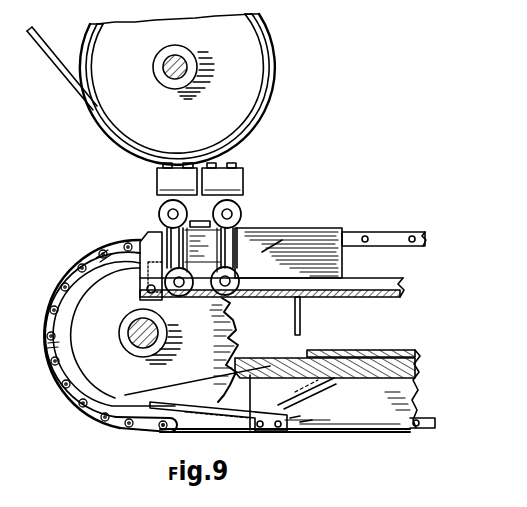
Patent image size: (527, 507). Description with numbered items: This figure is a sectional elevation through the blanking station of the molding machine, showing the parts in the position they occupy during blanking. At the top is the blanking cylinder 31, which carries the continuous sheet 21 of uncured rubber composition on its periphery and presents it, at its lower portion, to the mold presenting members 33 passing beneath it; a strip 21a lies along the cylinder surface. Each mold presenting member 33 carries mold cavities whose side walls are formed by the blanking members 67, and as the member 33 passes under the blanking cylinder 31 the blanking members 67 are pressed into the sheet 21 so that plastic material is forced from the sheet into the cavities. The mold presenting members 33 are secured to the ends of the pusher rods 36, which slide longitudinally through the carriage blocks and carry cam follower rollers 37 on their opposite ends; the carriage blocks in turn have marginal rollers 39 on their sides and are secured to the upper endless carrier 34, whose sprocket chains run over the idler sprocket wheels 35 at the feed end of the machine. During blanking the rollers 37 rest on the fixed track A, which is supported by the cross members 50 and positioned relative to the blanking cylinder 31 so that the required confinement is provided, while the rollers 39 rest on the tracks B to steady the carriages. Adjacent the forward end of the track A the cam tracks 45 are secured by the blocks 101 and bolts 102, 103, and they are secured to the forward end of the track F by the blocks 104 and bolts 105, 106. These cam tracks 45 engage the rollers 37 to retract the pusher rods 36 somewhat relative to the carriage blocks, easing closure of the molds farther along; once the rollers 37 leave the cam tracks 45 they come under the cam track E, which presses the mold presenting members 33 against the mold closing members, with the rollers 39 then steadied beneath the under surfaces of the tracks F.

The continuous sheet 21 is at (266, 32).
The strip 21a is at (54, 68).
The blanking cylinder 31 is at (252, 70).
The mold presenting member 33 is at (157, 182).
The upper endless carrier 34 is at (113, 428).
The idler sprocket wheels 35 is at (234, 336).
The pusher rod 36 is at (243, 197).
The cam follower roller 37 is at (231, 300).
The marginal roller 39 is at (159, 214).
The cam track 45 is at (72, 360).
The cross member 50 is at (302, 315).
The blanking member 67 is at (236, 162).
The block 101 is at (143, 286).
The bolt 102 is at (142, 300).
The bolt 103 is at (154, 292).
The block 104 is at (252, 432).
The bolt 105 is at (261, 410).
The bolt 106 is at (283, 432).
The fixed track A is at (380, 299).
The track B is at (300, 228).
The cam track E is at (359, 380).
The track F is at (331, 432).